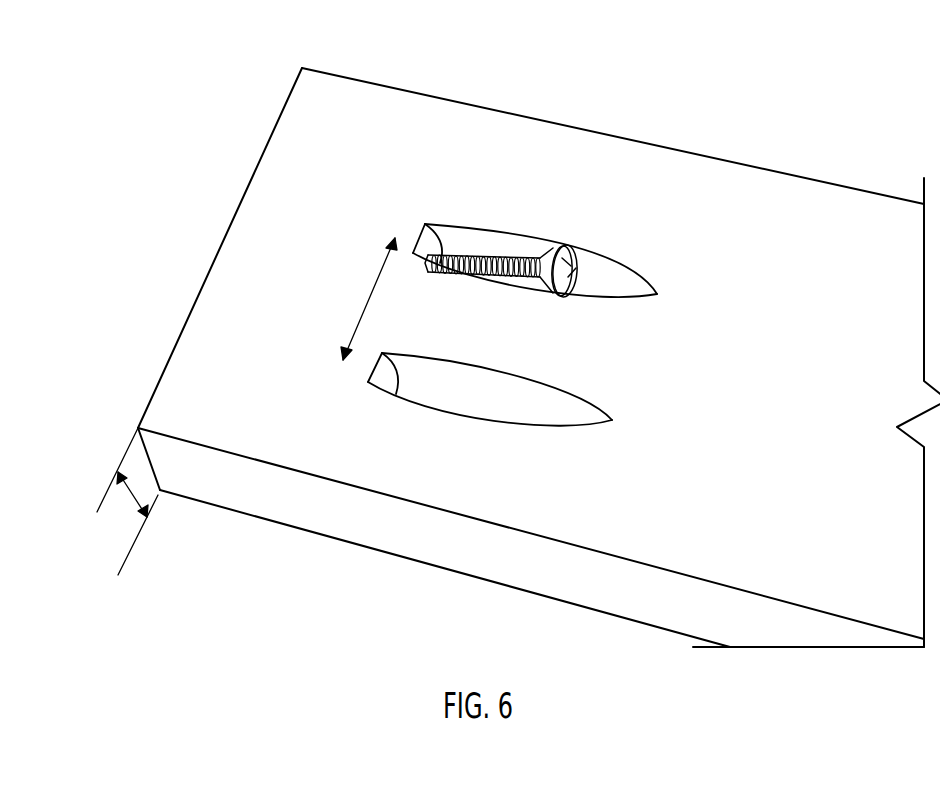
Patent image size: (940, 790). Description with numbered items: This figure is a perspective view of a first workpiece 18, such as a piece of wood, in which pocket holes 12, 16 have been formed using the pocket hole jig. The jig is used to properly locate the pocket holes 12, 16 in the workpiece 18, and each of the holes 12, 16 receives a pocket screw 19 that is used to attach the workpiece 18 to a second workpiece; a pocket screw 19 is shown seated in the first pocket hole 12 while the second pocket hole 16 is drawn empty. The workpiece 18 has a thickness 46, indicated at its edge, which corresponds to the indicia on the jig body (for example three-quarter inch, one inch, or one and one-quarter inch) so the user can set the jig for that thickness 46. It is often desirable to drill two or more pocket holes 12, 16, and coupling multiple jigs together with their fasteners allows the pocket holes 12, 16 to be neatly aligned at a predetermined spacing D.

The pocket hole 12 is at (477, 222).
The pocket hole 16 is at (425, 392).
The workpiece 18 is at (727, 210).
The pocket screw 19 is at (558, 244).
The thickness 46 is at (128, 497).
The predetermined spacing D is at (365, 302).